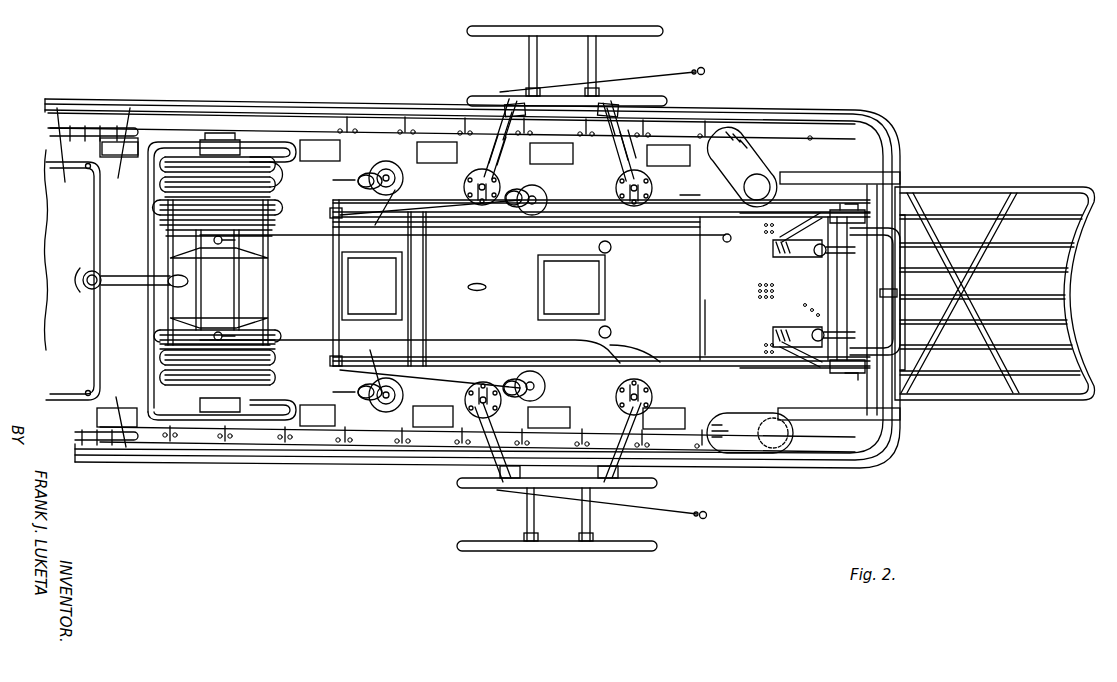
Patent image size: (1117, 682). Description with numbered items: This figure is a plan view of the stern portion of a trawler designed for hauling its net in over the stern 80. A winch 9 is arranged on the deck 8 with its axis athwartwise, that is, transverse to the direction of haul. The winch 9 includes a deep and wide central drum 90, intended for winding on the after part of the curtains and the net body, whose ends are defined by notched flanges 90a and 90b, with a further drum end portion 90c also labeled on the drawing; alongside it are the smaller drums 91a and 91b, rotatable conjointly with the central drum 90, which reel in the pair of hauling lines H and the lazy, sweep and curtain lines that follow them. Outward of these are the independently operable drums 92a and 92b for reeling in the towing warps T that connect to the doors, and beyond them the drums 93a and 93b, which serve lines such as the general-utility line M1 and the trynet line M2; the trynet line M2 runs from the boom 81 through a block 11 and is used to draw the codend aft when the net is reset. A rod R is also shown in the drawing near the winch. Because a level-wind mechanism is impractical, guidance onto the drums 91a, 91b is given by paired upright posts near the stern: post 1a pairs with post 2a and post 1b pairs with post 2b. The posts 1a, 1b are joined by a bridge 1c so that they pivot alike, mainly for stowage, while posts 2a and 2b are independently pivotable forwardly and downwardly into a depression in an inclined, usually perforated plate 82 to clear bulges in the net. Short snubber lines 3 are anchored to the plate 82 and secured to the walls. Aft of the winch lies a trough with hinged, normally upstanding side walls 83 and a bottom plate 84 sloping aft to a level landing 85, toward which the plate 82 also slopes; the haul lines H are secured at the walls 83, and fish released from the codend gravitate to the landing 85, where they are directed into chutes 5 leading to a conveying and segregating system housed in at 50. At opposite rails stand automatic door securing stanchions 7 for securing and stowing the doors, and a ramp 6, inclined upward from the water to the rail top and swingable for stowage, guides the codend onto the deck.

The post 1a is at (850, 205).
The post 1b is at (845, 372).
The bridge 1c is at (906, 281).
The post 2a is at (814, 252).
The post 2b is at (812, 340).
The snubber lines 3 is at (795, 215).
The chutes 5 is at (762, 170).
The ramp 6 is at (995, 275).
The automatic door securing stanchions 7 is at (648, 92).
The deck 8 is at (690, 185).
The winch 9 is at (146, 313).
The block 11 is at (882, 298).
The housing 50 is at (315, 125).
The stern 80 is at (895, 440).
The boom 81 is at (78, 270).
The plate 82 is at (800, 296).
The side walls 83 is at (665, 356).
The bottom plate 84 is at (535, 283).
The landing 85 is at (721, 327).
The central drum 90 is at (228, 286).
The notched flange 90a is at (255, 262).
The notched flange 90b is at (250, 322).
The upper motor end 90c is at (205, 254).
The smaller drum 91a is at (195, 233).
The smaller drum 91b is at (172, 344).
The additional drum 92a is at (160, 204).
The additional drum 92b is at (165, 366).
The drum 93a is at (155, 150).
The drum 93b is at (178, 398).
The line M1 is at (360, 175).
The trynet line M2 is at (350, 402).
The rod R is at (427, 250).
The hauling lines H is at (510, 228).
The towing warps T is at (667, 68).